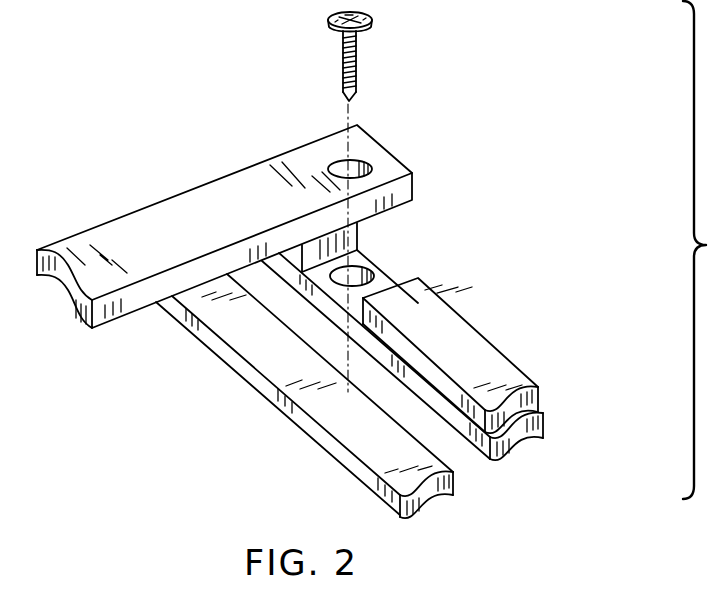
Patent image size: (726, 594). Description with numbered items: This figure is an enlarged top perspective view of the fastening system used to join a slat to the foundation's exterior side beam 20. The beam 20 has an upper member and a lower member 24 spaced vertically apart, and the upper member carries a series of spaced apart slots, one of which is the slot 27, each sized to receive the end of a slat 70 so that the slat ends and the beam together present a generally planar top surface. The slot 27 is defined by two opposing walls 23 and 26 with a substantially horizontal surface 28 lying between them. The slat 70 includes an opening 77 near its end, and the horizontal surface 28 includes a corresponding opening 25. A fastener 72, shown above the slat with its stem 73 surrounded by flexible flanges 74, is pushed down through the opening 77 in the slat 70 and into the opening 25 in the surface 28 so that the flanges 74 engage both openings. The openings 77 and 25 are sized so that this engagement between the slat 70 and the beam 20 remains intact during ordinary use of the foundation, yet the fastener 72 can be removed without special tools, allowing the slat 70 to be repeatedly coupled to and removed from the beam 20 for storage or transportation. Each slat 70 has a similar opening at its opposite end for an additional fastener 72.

The exterior side beam 20 is at (525, 380).
The wall 23 is at (357, 234).
The lower member 24 is at (348, 423).
The opening 25 is at (370, 272).
The wall 26 is at (393, 301).
The slot 27 is at (483, 273).
The horizontal surface 28 is at (359, 253).
The slat 70 is at (104, 235).
The fastener 72 is at (287, 38).
The stem 73 is at (355, 98).
The flexible flanges 74 is at (357, 50).
The opening 77 is at (370, 168).